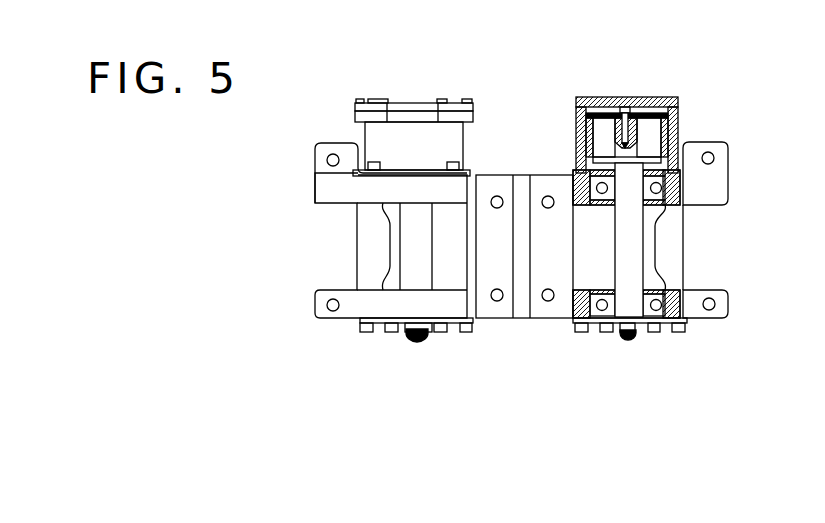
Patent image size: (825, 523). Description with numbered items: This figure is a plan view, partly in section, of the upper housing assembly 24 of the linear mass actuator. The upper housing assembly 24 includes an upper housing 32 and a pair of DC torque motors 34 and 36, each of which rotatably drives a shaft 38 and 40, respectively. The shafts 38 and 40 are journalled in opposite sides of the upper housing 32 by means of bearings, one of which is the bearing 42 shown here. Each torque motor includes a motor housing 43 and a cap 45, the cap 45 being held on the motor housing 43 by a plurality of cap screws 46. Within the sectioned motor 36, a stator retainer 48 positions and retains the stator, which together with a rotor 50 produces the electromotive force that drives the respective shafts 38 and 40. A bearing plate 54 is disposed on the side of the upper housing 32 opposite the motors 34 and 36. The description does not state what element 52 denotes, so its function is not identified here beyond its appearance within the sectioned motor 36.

The upper housing assembly 24 is at (313, 172).
The upper housing 32 is at (355, 275).
The DC torque motor 34 is at (423, 99).
The DC torque motor 36 is at (630, 98).
The shaft 38 is at (403, 240).
The shaft 40 is at (638, 242).
The bearing 42 is at (683, 181).
The motor housing 43 is at (680, 137).
The cap 45 is at (659, 97).
The cap screw 46 is at (355, 103).
The stator retainer 48 is at (578, 113).
The rotor 50 is at (581, 135).
The bushing 52 is at (583, 158).
The bearing plate 54 is at (663, 326).